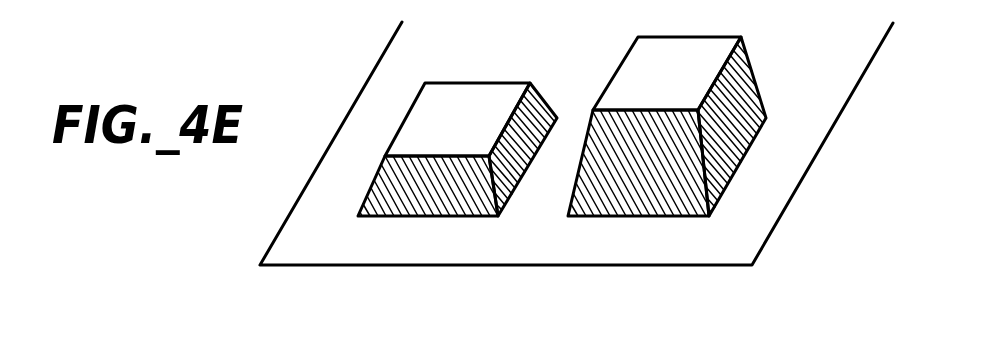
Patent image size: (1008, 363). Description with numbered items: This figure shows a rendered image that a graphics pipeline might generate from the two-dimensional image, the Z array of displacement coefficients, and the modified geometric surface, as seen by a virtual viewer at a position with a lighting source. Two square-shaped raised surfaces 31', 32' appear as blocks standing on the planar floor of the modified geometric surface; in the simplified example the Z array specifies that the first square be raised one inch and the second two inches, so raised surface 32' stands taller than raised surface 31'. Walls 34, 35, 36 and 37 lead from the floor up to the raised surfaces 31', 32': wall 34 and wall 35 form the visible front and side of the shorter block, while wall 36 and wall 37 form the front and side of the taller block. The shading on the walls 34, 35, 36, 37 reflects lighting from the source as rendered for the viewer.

The square-shaped raised surface 31' is at (465, 171).
The square-shaped raised surface 32' is at (713, 154).
The wall 34 is at (455, 202).
The wall 35 is at (500, 162).
The wall 36 is at (665, 202).
The wall 37 is at (747, 125).